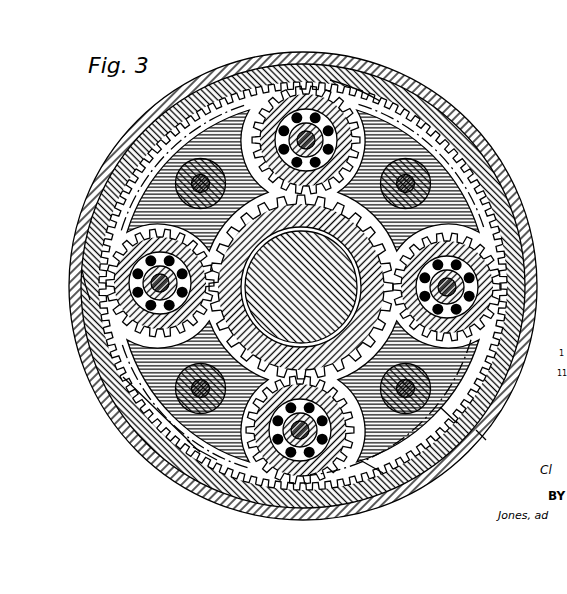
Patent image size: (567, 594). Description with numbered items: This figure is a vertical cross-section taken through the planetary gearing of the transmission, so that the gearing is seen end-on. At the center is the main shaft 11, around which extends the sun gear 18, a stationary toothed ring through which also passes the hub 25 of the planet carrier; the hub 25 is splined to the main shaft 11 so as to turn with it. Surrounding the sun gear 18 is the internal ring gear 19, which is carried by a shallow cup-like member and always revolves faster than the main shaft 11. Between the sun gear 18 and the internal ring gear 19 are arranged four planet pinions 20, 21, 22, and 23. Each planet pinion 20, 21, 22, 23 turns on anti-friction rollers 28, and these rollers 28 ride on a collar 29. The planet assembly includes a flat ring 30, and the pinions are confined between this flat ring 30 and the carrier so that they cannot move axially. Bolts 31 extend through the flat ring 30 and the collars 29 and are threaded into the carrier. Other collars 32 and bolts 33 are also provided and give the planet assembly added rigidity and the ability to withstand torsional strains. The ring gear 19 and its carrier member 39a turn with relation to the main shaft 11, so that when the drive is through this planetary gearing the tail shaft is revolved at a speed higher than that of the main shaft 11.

The main shaft 11 is at (291, 273).
The sun gear 18 is at (303, 286).
The internal ring gear 19 is at (468, 120).
The planet pinion 20 is at (328, 80).
The planet pinion 21 is at (477, 233).
The planet pinion 22 is at (365, 462).
The planet pinion 23 is at (118, 262).
The hub 25 is at (198, 449).
The anti-friction rollers 28 is at (372, 100).
The collar 29 is at (360, 100).
The flat ring 30 is at (153, 367).
The bolts 31 is at (90, 300).
The collars 32 is at (143, 428).
The bolts 33 is at (150, 458).
The housing flange 39a is at (497, 154).